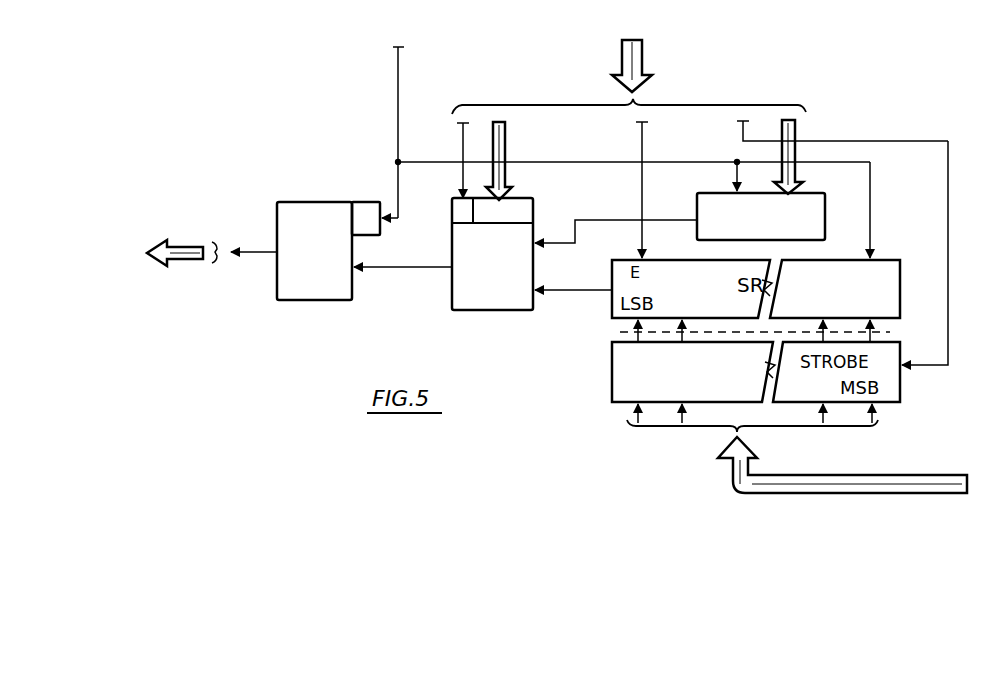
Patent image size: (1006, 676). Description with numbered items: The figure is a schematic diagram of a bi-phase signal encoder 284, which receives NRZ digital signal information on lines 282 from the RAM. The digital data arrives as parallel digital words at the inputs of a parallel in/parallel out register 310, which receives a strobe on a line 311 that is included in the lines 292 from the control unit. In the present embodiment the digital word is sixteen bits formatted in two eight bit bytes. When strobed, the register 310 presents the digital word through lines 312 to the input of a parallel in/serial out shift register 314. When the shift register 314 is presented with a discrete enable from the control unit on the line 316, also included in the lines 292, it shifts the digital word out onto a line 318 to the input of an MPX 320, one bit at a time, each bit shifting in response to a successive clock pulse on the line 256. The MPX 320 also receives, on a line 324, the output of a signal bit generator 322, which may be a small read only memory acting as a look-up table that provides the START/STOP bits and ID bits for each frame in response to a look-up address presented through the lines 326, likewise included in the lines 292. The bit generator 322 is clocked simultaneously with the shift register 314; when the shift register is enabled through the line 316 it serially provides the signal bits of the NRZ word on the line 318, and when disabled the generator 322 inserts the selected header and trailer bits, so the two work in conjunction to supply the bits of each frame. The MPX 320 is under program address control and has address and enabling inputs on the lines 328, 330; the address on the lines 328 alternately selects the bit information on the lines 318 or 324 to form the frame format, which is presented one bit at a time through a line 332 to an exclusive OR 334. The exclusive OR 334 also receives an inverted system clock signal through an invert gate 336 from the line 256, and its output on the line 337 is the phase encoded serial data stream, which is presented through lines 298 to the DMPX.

The clock line 256 is at (402, 55).
The lines from RAM 282 is at (857, 480).
The encoder 284 is at (848, 98).
The control unit lines 292 is at (646, 48).
The output lines 298 is at (188, 222).
The parallel in/parallel out register 310 is at (613, 375).
The strobe line 311 is at (950, 258).
The register output lines 312 is at (635, 336).
The parallel in/serial out shift register 314 is at (882, 262).
The enable line 316 is at (644, 140).
The shift register output line 318 is at (560, 286).
The MPX 320 is at (472, 302).
The signal bit generator 322 is at (805, 205).
The bit generator output line 324 is at (622, 213).
The look-up address lines 326 is at (797, 130).
The MPX address lines 328 is at (507, 140).
The MPX enabling lines 330 is at (458, 138).
The MPX output line 332 is at (388, 266).
The exclusive OR 334 is at (303, 200).
The invert gate 336 is at (360, 200).
The EOR output line 337 is at (262, 250).